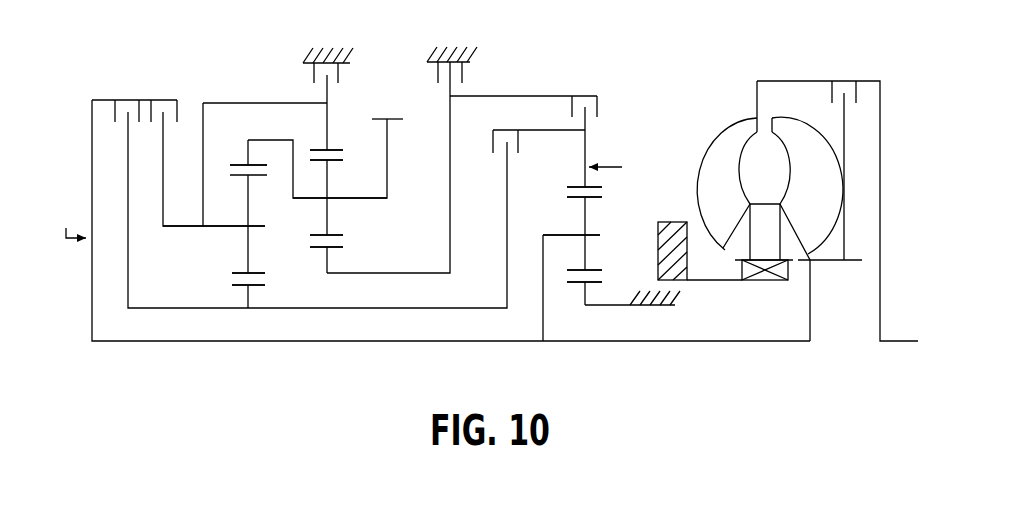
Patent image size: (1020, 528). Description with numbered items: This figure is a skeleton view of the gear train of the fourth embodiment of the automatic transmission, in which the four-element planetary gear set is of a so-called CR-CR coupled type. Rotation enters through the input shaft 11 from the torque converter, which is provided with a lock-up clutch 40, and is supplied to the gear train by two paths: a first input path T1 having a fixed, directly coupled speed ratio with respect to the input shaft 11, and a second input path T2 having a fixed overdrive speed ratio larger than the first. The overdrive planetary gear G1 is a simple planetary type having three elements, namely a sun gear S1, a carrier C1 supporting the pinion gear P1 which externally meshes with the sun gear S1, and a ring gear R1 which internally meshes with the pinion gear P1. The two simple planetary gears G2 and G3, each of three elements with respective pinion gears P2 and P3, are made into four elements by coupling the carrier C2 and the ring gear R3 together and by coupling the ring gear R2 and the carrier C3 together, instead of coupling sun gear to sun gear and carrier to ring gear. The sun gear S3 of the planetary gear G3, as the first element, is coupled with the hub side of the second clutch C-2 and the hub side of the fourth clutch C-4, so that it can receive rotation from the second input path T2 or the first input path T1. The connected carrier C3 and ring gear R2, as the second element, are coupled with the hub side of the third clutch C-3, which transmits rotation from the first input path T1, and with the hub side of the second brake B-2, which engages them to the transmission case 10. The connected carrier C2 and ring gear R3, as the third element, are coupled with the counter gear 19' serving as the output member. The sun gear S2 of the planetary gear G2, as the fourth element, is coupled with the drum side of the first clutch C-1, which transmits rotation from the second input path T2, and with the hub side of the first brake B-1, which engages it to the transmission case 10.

The transmission case 10 is at (308, 53).
The input shaft 11 is at (422, 343).
The counter gear 19' is at (397, 93).
The lock-up clutch 40 is at (793, 80).
The first brake B-1 is at (452, 52).
The second brake B-2 is at (328, 53).
The first clutch C-1 is at (583, 94).
The second clutch C-2 is at (536, 130).
The third clutch C-3 is at (163, 99).
The fourth clutch C-4 is at (122, 99).
The overdrive planetary gear G1 is at (600, 141).
The second simple planetary gear G2 is at (343, 136).
The third simple planetary gear G3 is at (259, 154).
The ring gear R1 is at (577, 186).
The ring gear R2 is at (323, 149).
The ring gear R3 is at (236, 164).
The pinion gear P1 is at (588, 198).
The pinion gear P2 is at (333, 162).
The pinion gear P3 is at (258, 272).
The sun gear S1 is at (598, 286).
The sun gear S2 is at (318, 250).
The sun gear S3 is at (232, 285).
The carrier C1 is at (548, 234).
The carrier C2 is at (352, 199).
The carrier C3 is at (230, 228).
The first input path T1 is at (71, 222).
The second input path T2 is at (617, 166).